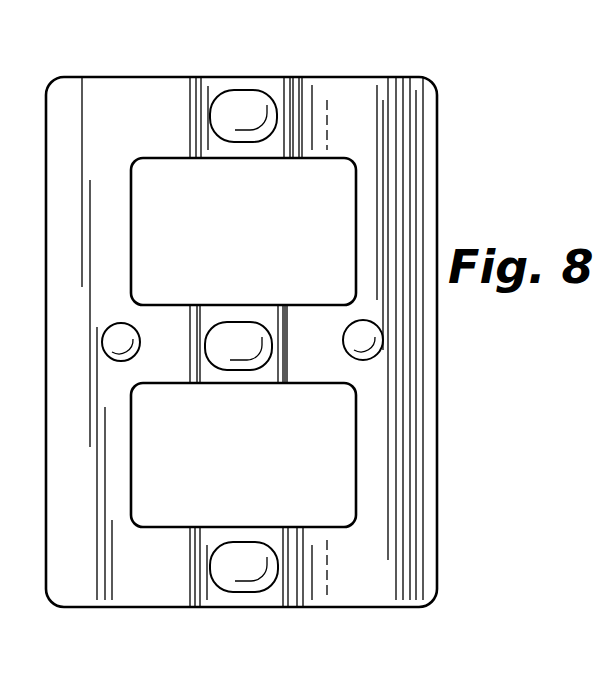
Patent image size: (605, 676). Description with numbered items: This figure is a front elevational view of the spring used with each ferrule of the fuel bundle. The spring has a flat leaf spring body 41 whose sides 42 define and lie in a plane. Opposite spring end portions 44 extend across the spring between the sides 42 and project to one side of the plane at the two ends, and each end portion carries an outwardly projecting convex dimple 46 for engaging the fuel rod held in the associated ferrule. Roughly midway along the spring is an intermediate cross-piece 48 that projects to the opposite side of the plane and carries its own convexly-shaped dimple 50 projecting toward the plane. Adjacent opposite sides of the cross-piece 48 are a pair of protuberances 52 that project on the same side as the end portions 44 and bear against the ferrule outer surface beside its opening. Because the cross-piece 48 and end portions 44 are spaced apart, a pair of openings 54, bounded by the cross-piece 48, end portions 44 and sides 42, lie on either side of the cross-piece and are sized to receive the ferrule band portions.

The flat leaf spring body 41 is at (458, 172).
The sides 42 is at (52, 270).
The spring end portions 44 is at (170, 85).
The convex dimple 46 is at (243, 100).
The cross-piece 48 is at (320, 368).
The convexly-shaped dimple 50 is at (226, 350).
The protuberances 52 is at (367, 352).
The openings 54 is at (250, 250).